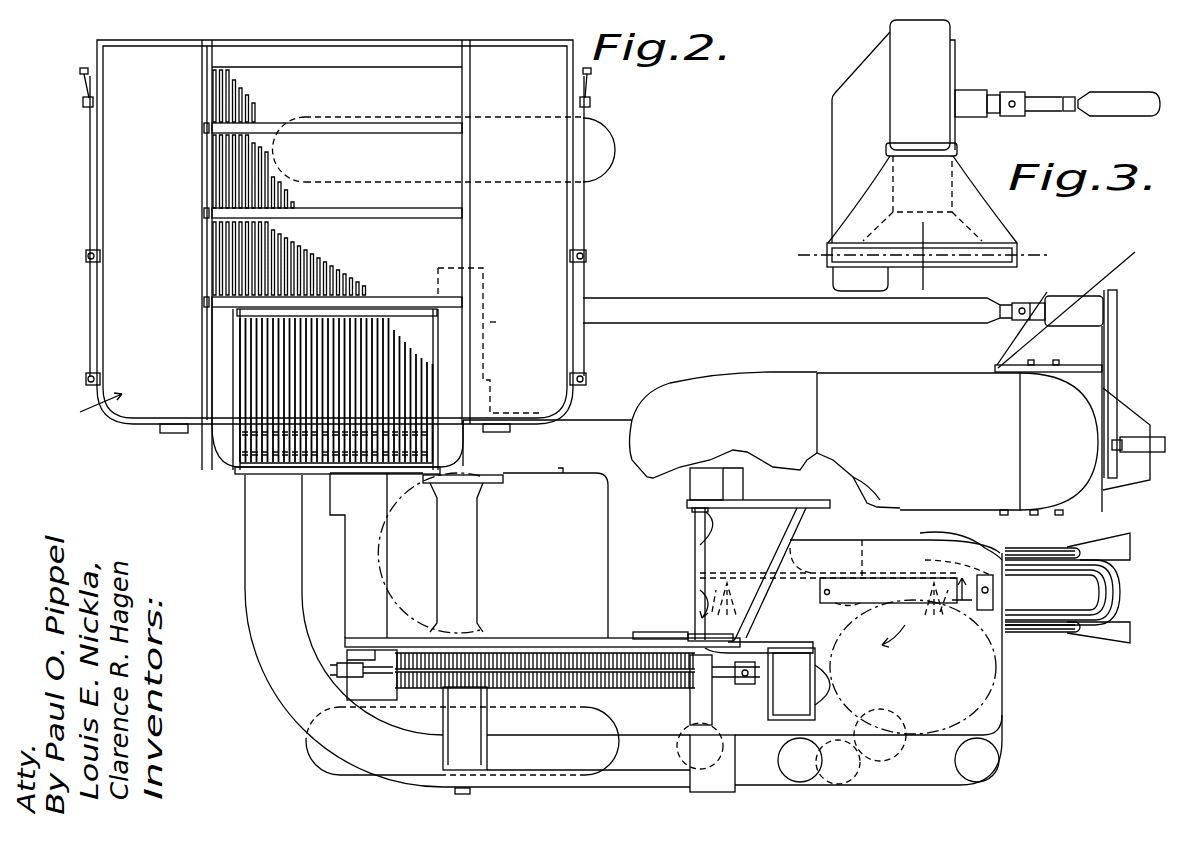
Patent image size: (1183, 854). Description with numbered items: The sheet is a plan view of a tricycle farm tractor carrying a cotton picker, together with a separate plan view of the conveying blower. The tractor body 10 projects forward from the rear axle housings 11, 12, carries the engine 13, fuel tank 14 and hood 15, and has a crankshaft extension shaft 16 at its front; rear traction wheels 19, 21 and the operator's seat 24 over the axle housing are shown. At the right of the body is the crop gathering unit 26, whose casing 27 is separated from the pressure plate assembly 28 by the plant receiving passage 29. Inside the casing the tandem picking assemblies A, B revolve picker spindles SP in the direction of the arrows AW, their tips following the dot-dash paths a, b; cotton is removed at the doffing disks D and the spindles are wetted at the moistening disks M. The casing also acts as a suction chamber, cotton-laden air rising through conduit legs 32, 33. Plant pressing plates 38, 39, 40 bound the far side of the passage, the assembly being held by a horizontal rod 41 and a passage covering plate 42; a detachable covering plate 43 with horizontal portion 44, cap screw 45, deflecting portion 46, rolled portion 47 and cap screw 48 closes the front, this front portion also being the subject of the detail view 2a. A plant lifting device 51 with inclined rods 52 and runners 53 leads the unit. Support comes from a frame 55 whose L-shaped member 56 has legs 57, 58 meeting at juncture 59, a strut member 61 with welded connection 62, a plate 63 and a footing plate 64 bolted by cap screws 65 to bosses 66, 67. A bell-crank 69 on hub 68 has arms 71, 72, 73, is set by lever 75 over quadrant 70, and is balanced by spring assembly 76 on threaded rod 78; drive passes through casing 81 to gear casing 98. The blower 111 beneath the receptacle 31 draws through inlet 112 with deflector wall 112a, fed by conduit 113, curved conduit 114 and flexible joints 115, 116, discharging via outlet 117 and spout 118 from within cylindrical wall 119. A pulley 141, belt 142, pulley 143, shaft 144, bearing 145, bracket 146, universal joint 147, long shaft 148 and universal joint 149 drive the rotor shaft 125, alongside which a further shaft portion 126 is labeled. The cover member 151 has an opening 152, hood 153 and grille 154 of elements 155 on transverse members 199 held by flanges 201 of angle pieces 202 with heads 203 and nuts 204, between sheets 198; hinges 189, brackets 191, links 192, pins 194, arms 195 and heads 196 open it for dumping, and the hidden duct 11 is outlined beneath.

In FIG. 2, the body 10 is at (590, 428).
In FIG. 2, the rear axle housing 11 is at (486, 324).
In FIG. 2, the rear axle housing 12 is at (480, 565).
In FIG. 2, the internal combustion engine 13 is at (852, 492).
In FIG. 2, the fuel tank 14 is at (762, 382).
In FIG. 2, the hood 15 is at (880, 382).
In FIG. 2, the shaft 16 is at (1100, 455).
In FIG. 2, the rear traction wheel 19 is at (610, 150).
In FIG. 2, the rear traction wheel 21 is at (328, 765).
In FIG. 2, the operator's seat 24 is at (340, 553).
In FIG. 2, the crop gathering unit 26 is at (1010, 702).
In FIG. 2, the casing 27 is at (995, 690).
In FIG. 2, the pressure plate assembly 28 is at (908, 540).
In FIG. 2, the plant receiving passage 29 is at (864, 545).
In FIG. 2, the crop-receiving receptacle 31 is at (85, 407).
In FIG. 2, the conduit leg 32 is at (962, 780).
In FIG. 2, the conduit leg 33 is at (828, 778).
In FIG. 2, the plant pressing plate 38 is at (980, 560).
In FIG. 2, the plant pressing plate 39 is at (830, 573).
In FIG. 2, the plant pressing plate 40 is at (808, 545).
In FIG. 2, the horizontal rod 41 is at (987, 548).
In FIG. 2, the passage covering plate 42 is at (820, 587).
In FIG. 2, the detachable covering plate 43 is at (832, 612).
In FIG. 2, the horizontal portion 44 is at (845, 608).
In FIG. 2, the cap screw 45 is at (870, 582).
In FIG. 2, the plant deflecting portion 46 is at (945, 610).
In FIG. 2, the rolled portion 47 is at (1000, 642).
In FIG. 2, the cap screw 48 is at (1012, 552).
In FIG. 2, the plant lifting device 51 is at (1066, 639).
In FIG. 2, the backwardly inclined rods 52 is at (1100, 598).
In FIG. 2, the ground-engaging runners 53 is at (1128, 534).
In FIG. 2, the frame 55 is at (595, 633).
In FIG. 2, the L-shaped frame member 56 is at (573, 636).
In FIG. 2, the fore and aft extending leg 57 is at (555, 638).
In FIG. 2, the laterally turned leg 58 is at (790, 520).
In FIG. 2, the juncture 59 is at (742, 633).
In FIG. 2, the strut member 61 is at (692, 543).
In FIG. 2, the welded connection 62 is at (720, 596).
In FIG. 2, the plate 63 is at (520, 625).
In FIG. 2, the footing plate 64 is at (748, 512).
In FIG. 2, the cap screws 65 is at (698, 513).
In FIG. 2, the boss 66 is at (792, 464).
In FIG. 2, the boss 67 is at (692, 482).
In FIG. 2, the hub 68 is at (740, 687).
In FIG. 2, the bell-crank 69 is at (690, 716).
In FIG. 2, the quadrant 70 is at (650, 632).
In FIG. 2, the horizontal arm 71 is at (742, 760).
In FIG. 2, the horizontal arm 72 is at (791, 684).
In FIG. 2, the upright arm 73 is at (701, 690).
In FIG. 2, the lever 75 is at (640, 676).
In FIG. 2, the counter-balancing spring assembly 76 is at (560, 700).
In FIG. 2, the threaded rod 78 is at (372, 675).
In FIG. 2, the casing 81 is at (347, 676).
In FIG. 2, the gear casing 98 is at (840, 686).
In FIG. 3, the blower 111 is at (883, 36).
In FIG. 3, the horizontal inlet 112 is at (832, 178).
In FIG. 3, the deflector wall 112a is at (860, 72).
In FIG. 2, the conduit 113 is at (735, 790).
In FIG. 2, the curved conduit 114 is at (290, 717).
In FIG. 2, the flexible joint 115 is at (473, 793).
In FIG. 2, the flexible joint 116 is at (692, 768).
In FIG. 3, the fan outlet 117 is at (956, 190).
In FIG. 2, the spout 118 is at (273, 460).
In FIG. 3, the spout 118 is at (985, 236).
In FIG. 3, the cylindrical wall 119 is at (952, 32).
In FIG. 3, the blower rotor shaft 125 is at (985, 86).
In FIG. 3, the shaft 126 is at (972, 110).
In FIG. 2, the pulley 141 is at (1140, 420).
In FIG. 2, the belt 142 is at (1120, 365).
In FIG. 2, the pulley 143 is at (1120, 272).
In FIG. 2, the shaft 144 is at (1080, 300).
In FIG. 2, the bearing 145 is at (1080, 318).
In FIG. 2, the bracket 146 is at (1082, 348).
In FIG. 2, the universal joint 147 is at (1012, 322).
In FIG. 2, the long shaft 148 is at (720, 292).
In FIG. 3, the long shaft 148 is at (1125, 98).
In FIG. 3, the universal joint 149 is at (1049, 86).
In FIG. 2, the cover member 151 is at (530, 370).
In FIG. 2, the opening 152 is at (448, 252).
In FIG. 2, the hood 153 is at (458, 447).
In FIG. 2, the grille 154 is at (227, 262).
In FIG. 2, the grate elements 155 is at (215, 118).
In FIG. 2, the hinges 189 is at (170, 434).
In FIG. 2, the double-legged brackets 191 is at (97, 320).
In FIG. 2, the links 192 is at (88, 160).
In FIG. 2, the pins 194 is at (83, 106).
In FIG. 2, the arms 195 is at (86, 88).
In FIG. 2, the heads 196 is at (80, 70).
In FIG. 2, the debris-impervious sheet 198 is at (98, 206).
In FIG. 2, the transverse member 199 is at (362, 130).
In FIG. 2, the upright flanges 201 is at (205, 163).
In FIG. 2, the angle pieces 202 is at (203, 80).
In FIG. 2, the faceted head 203 is at (470, 132).
In FIG. 2, the nut 204 is at (204, 213).
In FIG. 2, the spindle tip path a is at (966, 657).
In FIG. 3, the spindle tip path a is at (923, 256).
In FIG. 2, the cotton-picking assembly A is at (933, 665).
In FIG. 2, the cotton-picking assembly B is at (760, 642).
In FIG. 2, the spindle tip path b is at (810, 640).
In FIG. 2, the doffing disks D is at (678, 748).
In FIG. 2, the moistening disks M is at (853, 758).
In FIG. 2, the picker spindles SP is at (732, 580).
In FIG. 2, the arrows AW is at (771, 616).
In FIG. 2, the dimension 2a is at (963, 597).